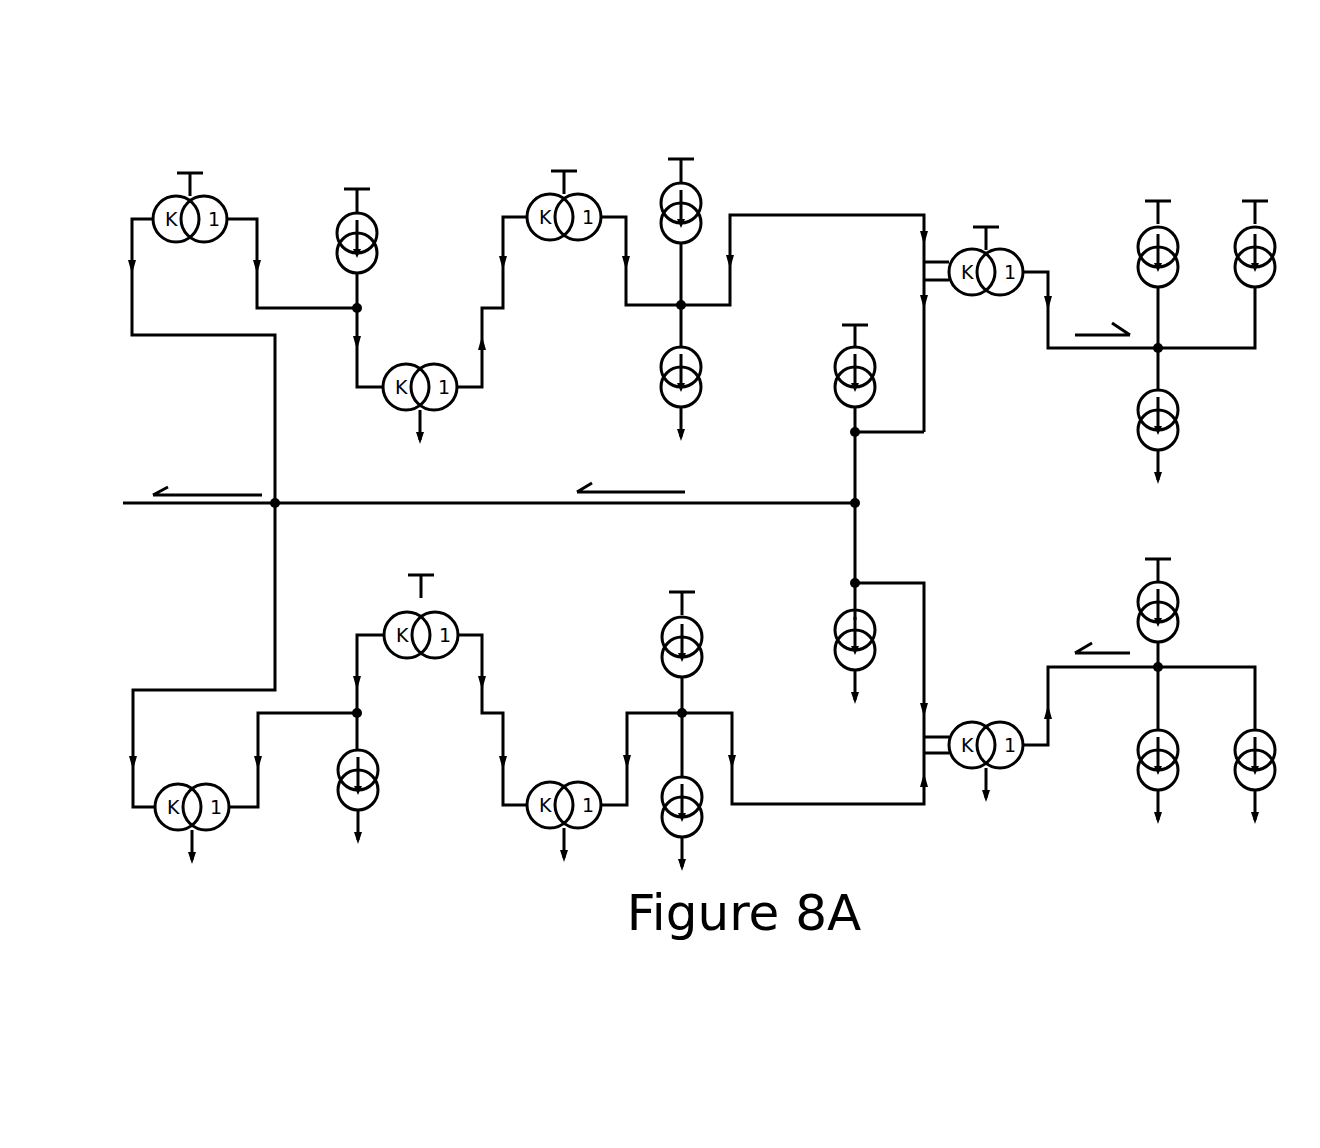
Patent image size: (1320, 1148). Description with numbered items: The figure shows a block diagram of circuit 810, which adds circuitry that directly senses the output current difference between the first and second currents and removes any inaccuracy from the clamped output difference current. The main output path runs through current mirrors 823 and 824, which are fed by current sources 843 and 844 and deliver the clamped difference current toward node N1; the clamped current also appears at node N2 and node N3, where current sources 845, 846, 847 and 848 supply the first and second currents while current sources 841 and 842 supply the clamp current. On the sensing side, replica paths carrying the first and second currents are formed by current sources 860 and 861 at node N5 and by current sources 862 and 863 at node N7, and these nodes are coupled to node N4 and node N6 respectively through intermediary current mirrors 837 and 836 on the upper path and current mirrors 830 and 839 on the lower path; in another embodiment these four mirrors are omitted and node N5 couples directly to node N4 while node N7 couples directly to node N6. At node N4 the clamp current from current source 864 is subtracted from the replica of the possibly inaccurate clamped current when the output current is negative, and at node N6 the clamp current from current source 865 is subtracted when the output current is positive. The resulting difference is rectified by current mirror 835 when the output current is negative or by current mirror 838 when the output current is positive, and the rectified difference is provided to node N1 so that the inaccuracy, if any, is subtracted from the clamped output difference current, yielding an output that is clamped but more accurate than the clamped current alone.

The circuit 810 is at (788, 75).
The current mirror 823 is at (999, 296).
The current mirror 824 is at (999, 722).
The current mirror 830 is at (561, 782).
The current mirror 835 is at (204, 243).
The current mirror 836 is at (419, 365).
The current mirror 837 is at (574, 242).
The current mirror 838 is at (177, 786).
The current mirror 839 is at (399, 616).
The current source 841 is at (1246, 244).
The current source 842 is at (1247, 783).
The current source 843 is at (839, 375).
The current source 844 is at (841, 640).
The current source 845 is at (1146, 242).
The current source 846 is at (1146, 406).
The current source 847 is at (1140, 590).
The current source 848 is at (1145, 784).
The current source 860 is at (700, 200).
The current source 861 is at (662, 392).
The current source 862 is at (665, 623).
The current source 863 is at (665, 829).
The current source 864 is at (341, 232).
The current source 865 is at (381, 778).
The node N1 is at (861, 504).
The node N2 is at (1161, 354).
The node N3 is at (1160, 668).
The node N4 is at (355, 311).
The node N5 is at (685, 305).
The node N6 is at (362, 713).
The node N7 is at (686, 712).